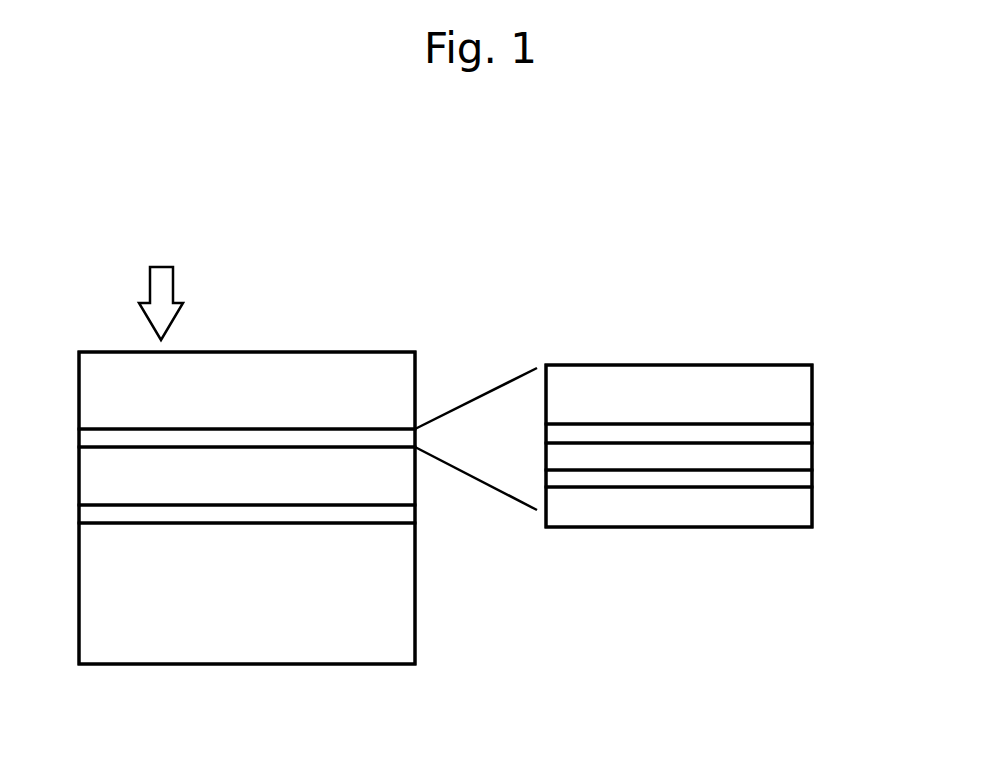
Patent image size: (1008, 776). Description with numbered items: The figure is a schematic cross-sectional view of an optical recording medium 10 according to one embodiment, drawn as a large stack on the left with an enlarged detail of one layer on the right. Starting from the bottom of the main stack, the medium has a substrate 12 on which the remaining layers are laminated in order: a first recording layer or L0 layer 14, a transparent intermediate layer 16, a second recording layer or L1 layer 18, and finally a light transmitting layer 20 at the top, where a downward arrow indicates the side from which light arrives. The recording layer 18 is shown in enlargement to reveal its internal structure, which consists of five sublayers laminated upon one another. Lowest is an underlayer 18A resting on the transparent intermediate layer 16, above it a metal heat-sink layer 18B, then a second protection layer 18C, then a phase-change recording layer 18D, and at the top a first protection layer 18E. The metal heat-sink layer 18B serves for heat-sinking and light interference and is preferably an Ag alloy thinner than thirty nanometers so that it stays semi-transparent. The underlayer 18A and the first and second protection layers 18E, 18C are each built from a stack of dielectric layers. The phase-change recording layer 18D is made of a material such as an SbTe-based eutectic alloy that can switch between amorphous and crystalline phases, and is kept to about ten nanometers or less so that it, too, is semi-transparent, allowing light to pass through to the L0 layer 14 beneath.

The optical recording medium 10 is at (354, 306).
The substrate 12 is at (90, 562).
The first recording layer (L0 layer) 14 is at (90, 516).
The transparent intermediate layer 16 is at (90, 479).
The second recording layer (L1 layer) 18 is at (90, 437).
The light transmitting layer 20 is at (90, 391).
The underlayer 18A is at (797, 515).
The metal heat-sink layer 18B is at (800, 482).
The second protection layer 18C is at (803, 462).
The phase-change recording layer 18D is at (800, 434).
The first protection layer 18E is at (800, 393).